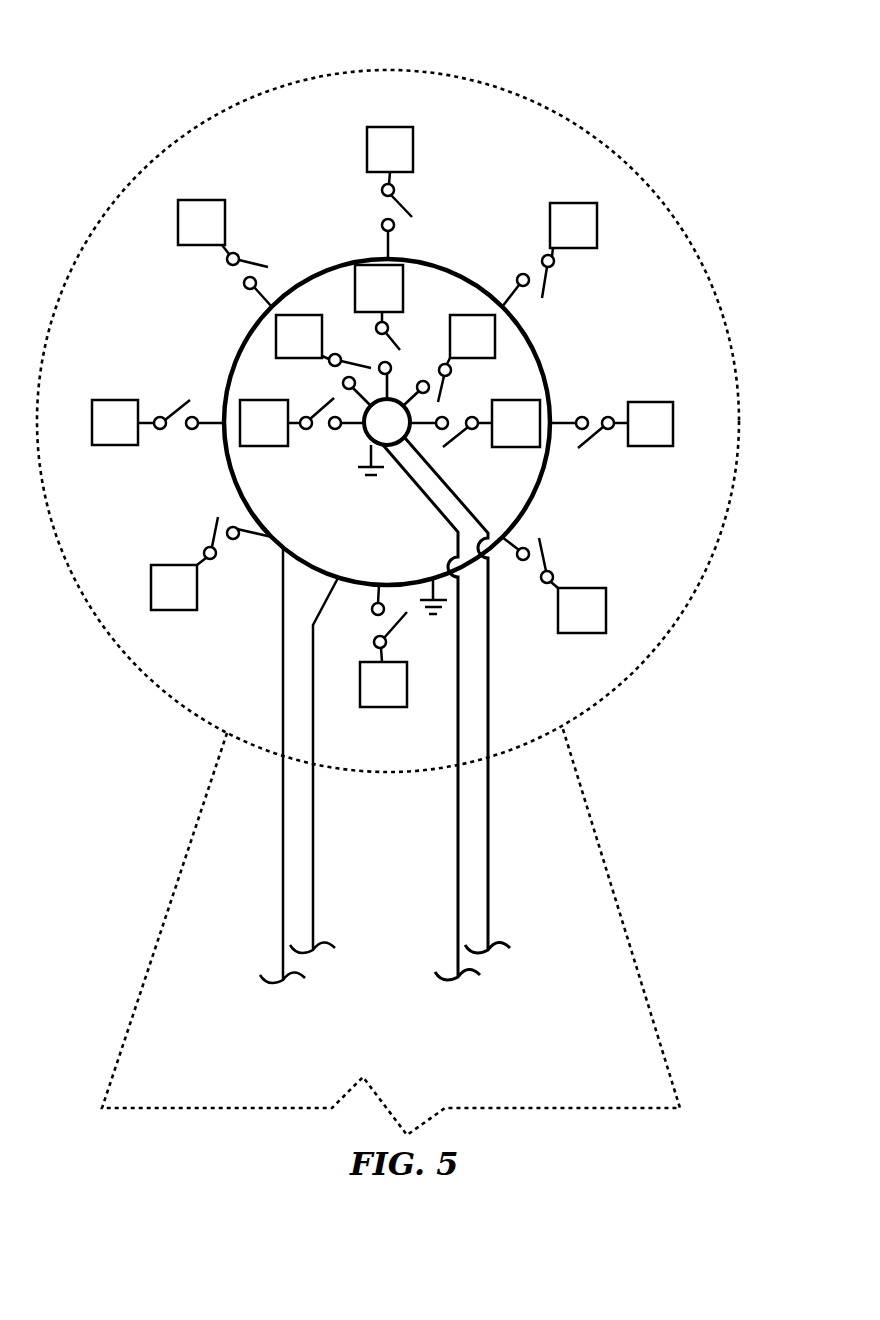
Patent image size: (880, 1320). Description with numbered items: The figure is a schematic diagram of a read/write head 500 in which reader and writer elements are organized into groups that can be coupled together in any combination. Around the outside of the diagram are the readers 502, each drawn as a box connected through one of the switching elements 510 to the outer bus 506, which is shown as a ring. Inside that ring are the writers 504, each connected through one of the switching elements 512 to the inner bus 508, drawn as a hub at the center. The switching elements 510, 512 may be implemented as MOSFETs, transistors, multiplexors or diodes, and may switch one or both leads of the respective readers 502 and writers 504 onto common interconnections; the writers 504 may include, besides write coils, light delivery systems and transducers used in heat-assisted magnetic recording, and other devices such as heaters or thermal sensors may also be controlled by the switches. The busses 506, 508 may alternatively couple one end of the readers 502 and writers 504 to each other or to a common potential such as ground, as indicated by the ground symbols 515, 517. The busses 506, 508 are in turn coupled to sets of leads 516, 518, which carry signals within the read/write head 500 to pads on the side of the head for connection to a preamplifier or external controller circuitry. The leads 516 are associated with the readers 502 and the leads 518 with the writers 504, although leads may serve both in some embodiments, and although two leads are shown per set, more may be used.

The read/write head 500 is at (472, 78).
The readers 502 is at (392, 127).
The writers 504 is at (405, 292).
The bus 506 is at (542, 348).
The bus 508 is at (366, 443).
The switching elements 510 is at (257, 256).
The switching elements 512 is at (348, 363).
The ground symbol 515 is at (426, 580).
The leads 516 is at (283, 826).
The ground symbol 517 is at (380, 474).
The leads 518 is at (455, 897).